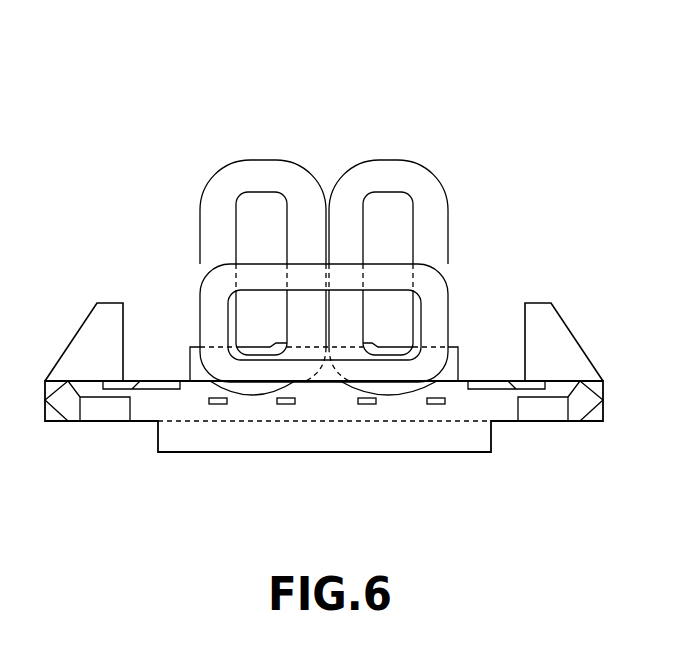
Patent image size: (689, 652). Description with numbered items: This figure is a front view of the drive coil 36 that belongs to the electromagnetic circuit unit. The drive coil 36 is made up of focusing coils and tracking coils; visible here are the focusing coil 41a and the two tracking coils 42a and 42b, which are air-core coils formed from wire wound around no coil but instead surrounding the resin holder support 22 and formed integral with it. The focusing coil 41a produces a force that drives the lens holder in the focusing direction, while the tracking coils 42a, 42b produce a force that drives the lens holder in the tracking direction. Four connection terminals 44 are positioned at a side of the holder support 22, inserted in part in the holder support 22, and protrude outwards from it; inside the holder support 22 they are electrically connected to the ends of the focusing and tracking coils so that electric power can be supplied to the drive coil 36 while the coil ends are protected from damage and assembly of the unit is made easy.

The holder support 22 is at (484, 402).
The drive coil 36 is at (528, 85).
The focusing coil 41a is at (222, 283).
The tracking coil 42a is at (297, 183).
The tracking coil 42b is at (413, 183).
The connection terminal 44 is at (216, 404).